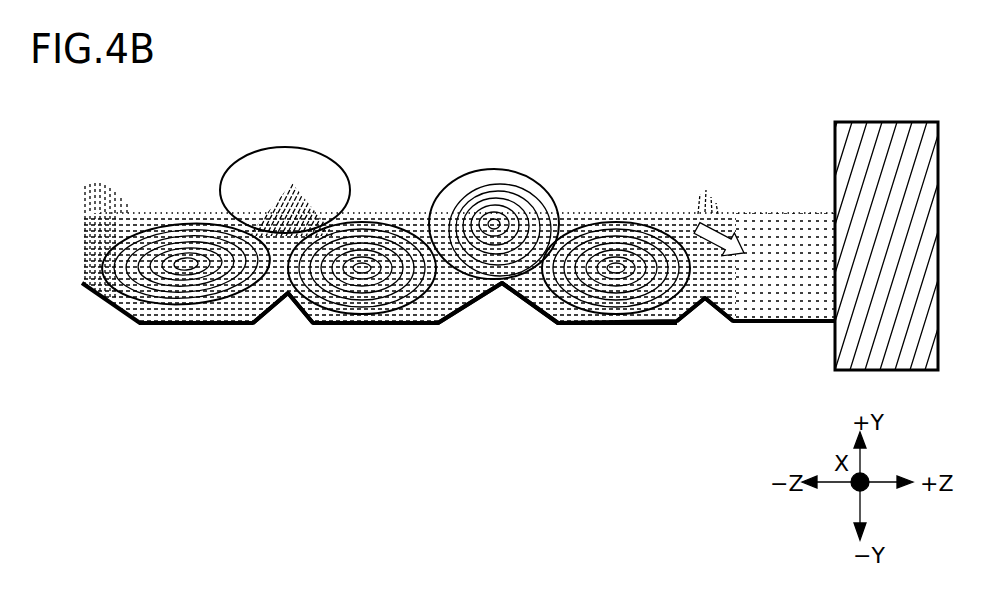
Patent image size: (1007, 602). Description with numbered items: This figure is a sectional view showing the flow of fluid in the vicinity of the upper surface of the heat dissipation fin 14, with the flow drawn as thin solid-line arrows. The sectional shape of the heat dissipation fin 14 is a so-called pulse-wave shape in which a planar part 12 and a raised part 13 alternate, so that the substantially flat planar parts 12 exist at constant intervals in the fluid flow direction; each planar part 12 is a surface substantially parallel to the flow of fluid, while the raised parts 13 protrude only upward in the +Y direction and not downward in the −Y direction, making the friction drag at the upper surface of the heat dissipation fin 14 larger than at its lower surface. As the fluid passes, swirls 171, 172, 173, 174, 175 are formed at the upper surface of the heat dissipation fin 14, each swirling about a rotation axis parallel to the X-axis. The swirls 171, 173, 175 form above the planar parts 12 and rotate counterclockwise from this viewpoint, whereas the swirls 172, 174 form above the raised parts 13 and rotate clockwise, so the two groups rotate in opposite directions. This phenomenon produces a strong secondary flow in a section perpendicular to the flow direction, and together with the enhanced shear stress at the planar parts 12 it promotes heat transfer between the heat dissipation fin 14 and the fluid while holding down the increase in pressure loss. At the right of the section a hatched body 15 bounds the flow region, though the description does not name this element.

The planar part 12 is at (205, 327).
The raised part 13 is at (293, 320).
The heat dissipation fin 14 is at (447, 380).
The wall 15 is at (890, 120).
The swirl 171 is at (180, 218).
The swirl 172 is at (283, 146).
The swirl 173 is at (373, 222).
The swirl 174 is at (492, 167).
The swirl 175 is at (620, 212).